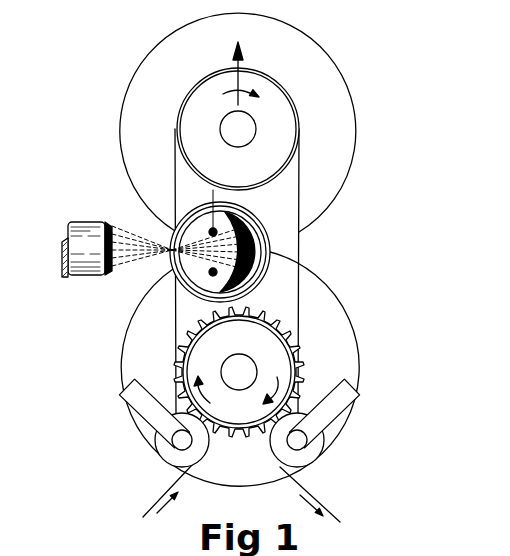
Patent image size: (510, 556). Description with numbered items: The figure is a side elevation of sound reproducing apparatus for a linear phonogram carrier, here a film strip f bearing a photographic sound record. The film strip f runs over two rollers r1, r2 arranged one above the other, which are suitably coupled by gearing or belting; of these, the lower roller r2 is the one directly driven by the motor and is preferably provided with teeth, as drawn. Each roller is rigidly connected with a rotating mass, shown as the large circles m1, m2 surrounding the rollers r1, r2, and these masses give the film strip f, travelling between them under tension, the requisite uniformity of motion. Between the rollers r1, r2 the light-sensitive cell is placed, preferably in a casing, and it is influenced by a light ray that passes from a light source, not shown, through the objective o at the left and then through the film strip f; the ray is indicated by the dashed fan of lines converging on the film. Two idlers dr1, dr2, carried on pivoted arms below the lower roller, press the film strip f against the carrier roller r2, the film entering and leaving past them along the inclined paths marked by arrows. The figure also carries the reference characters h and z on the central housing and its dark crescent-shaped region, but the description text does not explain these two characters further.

The objective o is at (83, 222).
The roller r1 is at (277, 102).
The rotating mass m1 is at (343, 113).
The crescent-shaped measuring zone / mark z is at (248, 217).
The film strip f is at (300, 238).
The measuring head / sensor housing h is at (197, 293).
The roller r2 is at (275, 347).
The rotating mass m2 is at (340, 355).
The idler dr1 is at (168, 453).
The idler dr2 is at (307, 457).